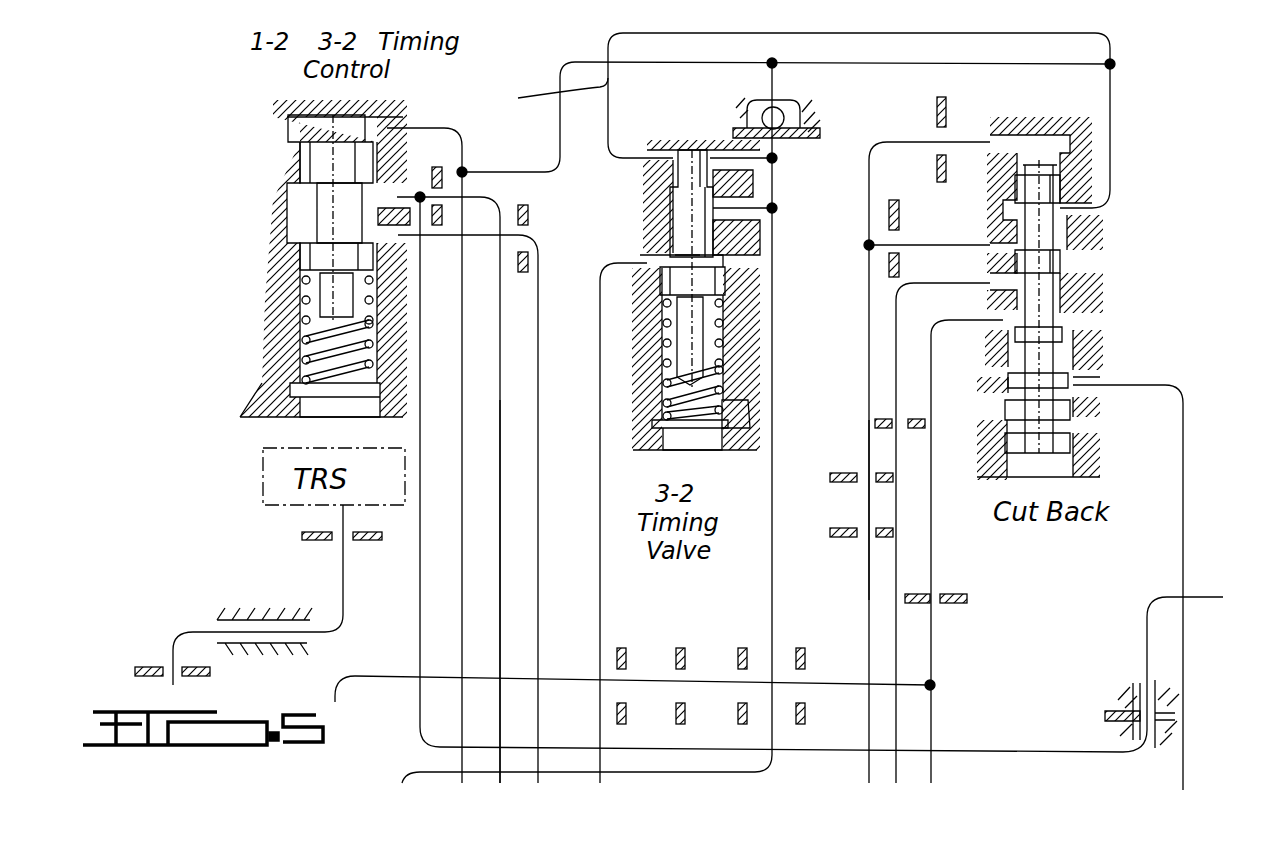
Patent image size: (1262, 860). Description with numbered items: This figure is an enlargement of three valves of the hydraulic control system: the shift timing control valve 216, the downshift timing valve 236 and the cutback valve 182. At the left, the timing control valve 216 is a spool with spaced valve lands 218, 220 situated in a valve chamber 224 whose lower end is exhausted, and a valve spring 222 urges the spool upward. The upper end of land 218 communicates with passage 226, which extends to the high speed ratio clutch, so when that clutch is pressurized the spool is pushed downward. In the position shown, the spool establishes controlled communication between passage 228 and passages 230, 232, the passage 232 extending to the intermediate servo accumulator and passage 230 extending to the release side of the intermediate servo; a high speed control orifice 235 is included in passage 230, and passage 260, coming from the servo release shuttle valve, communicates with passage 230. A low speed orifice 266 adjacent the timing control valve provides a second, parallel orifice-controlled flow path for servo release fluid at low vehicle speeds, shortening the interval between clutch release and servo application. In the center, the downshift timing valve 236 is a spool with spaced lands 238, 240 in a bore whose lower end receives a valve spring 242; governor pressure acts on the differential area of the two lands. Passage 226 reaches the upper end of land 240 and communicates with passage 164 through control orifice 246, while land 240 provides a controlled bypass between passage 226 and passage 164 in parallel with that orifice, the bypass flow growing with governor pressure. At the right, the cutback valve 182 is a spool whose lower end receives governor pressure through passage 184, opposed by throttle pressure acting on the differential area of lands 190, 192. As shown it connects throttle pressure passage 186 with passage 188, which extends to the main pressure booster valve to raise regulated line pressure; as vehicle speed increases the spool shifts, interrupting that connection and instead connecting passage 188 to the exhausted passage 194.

The valve land 218 is at (313, 157).
The 1-2/3-2 timing control valve 216 is at (312, 214).
The valve land 220 is at (313, 258).
The valve chamber 224 is at (300, 292).
The valve spring 222 is at (297, 347).
The passage 226 is at (785, 117).
The low speed orifice 266 is at (437, 190).
The passage 232 is at (540, 285).
The passage 230 is at (415, 605).
The passage 260 is at (498, 568).
The passage 228 is at (538, 642).
The 3-2 timing valve 236 is at (662, 204).
The control orifice 246 is at (721, 149).
The valve land 240 is at (727, 243).
The valve land 238 is at (723, 283).
The passage 164 is at (770, 370).
The valve spring 242 is at (720, 397).
The passage 194 is at (860, 415).
The valve land 192 is at (1062, 258).
The cutback valve 182 is at (1062, 280).
The passage 188 is at (918, 285).
The valve land 190 is at (1093, 367).
The passage 184 is at (1183, 480).
The throttle pressure passage 186 is at (932, 648).
The high speed control orifice 235 is at (1130, 706).